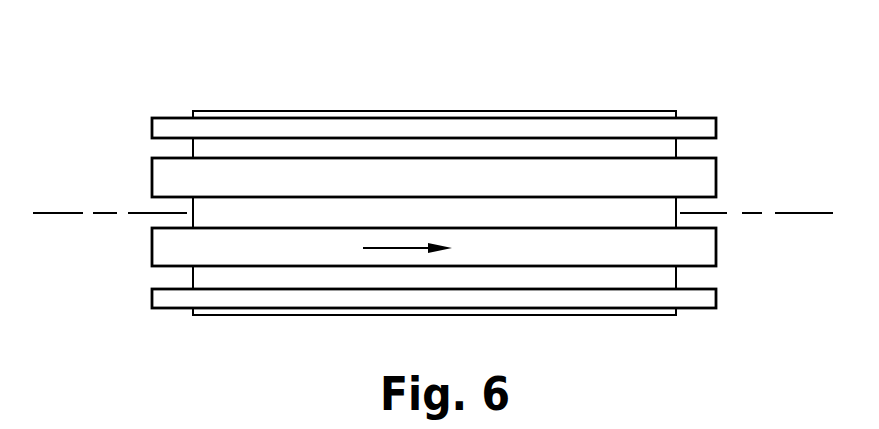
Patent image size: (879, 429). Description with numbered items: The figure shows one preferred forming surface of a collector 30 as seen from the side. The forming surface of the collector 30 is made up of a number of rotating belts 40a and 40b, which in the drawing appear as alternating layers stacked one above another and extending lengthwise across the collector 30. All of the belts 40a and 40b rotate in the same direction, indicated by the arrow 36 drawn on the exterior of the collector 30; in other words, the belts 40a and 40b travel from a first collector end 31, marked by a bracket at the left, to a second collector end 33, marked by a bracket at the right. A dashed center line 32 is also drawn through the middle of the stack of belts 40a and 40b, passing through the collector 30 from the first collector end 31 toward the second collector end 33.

The collector 30 is at (467, 90).
The first collector end 31 is at (222, 65).
The center line 32 is at (60, 212).
The second collector end 33 is at (733, 68).
The arrow 36 is at (380, 247).
The rotating belts 40a is at (698, 129).
The rotating belts 40b is at (612, 114).